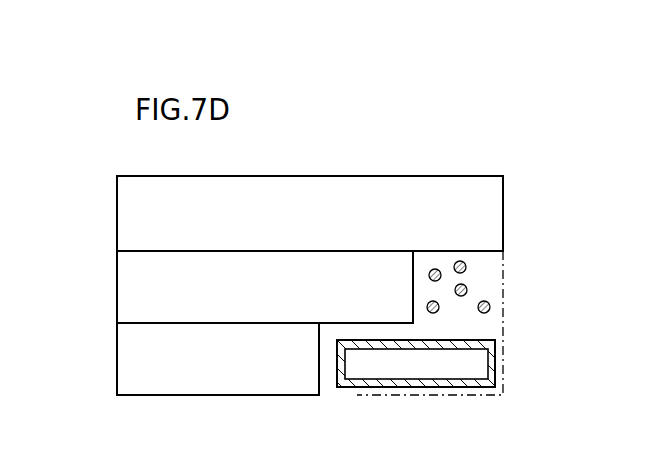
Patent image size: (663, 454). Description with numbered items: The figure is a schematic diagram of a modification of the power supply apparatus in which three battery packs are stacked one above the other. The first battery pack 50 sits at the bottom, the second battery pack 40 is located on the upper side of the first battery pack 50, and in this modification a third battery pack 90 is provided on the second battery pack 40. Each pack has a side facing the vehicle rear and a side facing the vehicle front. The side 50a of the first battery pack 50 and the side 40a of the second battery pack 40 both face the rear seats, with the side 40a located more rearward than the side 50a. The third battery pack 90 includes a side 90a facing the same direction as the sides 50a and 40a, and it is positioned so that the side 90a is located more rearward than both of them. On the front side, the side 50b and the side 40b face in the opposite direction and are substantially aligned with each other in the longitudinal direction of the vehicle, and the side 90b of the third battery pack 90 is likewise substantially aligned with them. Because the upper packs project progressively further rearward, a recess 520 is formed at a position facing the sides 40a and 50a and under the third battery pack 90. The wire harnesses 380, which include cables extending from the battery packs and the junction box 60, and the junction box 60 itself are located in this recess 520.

The third battery pack 90 is at (311, 188).
The side 90a is at (503, 213).
The side 90b is at (117, 215).
The second battery pack 40 is at (135, 278).
The side 40a is at (413, 292).
The side 40b is at (117, 302).
The wire harnesses 380 is at (490, 306).
The first battery pack 50 is at (217, 380).
The side 50a is at (320, 378).
The side 50b is at (117, 360).
The junction box 60 is at (413, 387).
The recess 520 is at (503, 365).